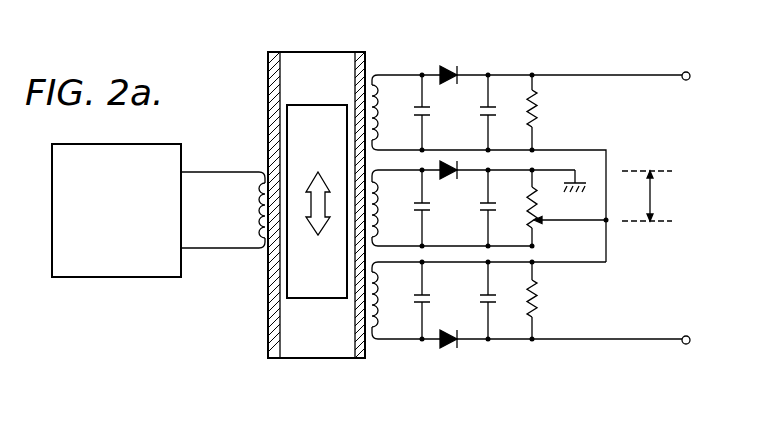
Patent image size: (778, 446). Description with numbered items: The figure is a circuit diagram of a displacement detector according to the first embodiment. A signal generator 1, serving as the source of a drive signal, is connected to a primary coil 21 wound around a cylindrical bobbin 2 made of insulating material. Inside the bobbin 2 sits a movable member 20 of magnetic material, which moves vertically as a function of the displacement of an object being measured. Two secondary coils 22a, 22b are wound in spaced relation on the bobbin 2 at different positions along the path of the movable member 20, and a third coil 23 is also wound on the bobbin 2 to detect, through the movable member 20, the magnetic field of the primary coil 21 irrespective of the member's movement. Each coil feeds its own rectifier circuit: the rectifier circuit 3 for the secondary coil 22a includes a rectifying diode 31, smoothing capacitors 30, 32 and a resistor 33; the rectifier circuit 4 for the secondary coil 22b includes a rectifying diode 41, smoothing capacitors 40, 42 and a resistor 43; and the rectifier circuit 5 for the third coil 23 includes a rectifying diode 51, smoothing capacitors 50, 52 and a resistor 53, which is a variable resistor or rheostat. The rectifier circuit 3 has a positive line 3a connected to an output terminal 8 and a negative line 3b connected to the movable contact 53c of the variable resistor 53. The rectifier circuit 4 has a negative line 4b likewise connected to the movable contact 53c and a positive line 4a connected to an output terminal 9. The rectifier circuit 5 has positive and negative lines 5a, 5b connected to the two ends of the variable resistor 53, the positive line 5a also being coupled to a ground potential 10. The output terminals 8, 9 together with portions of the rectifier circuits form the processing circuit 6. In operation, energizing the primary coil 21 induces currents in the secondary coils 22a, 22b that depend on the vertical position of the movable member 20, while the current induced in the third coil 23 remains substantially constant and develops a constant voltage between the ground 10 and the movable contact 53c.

The signal generator 1 is at (128, 267).
The cylindrical bobbin 2 is at (275, 316).
The movable member 20 is at (322, 288).
The primary coil 21 is at (252, 213).
The secondary coil 22a is at (383, 100).
The secondary coil 22b is at (382, 328).
The third coil 23 is at (381, 208).
The rectifier circuit 3 is at (527, 132).
The positive terminal or line 3a is at (600, 75).
The negative terminal or line 3b is at (573, 150).
The smoothing capacitor 30 is at (421, 118).
The rectifying diode 31 is at (448, 73).
The smoothing capacitor 32 is at (492, 108).
The resistor 33 is at (540, 110).
The rectifier circuit 4 is at (514, 338).
The positive terminal or line 4a is at (632, 342).
The negative terminal or line 4b is at (553, 263).
The smoothing capacitor 40 is at (426, 297).
The rectifying diode 41 is at (450, 343).
The smoothing capacitor 42 is at (491, 300).
The resistor 43 is at (539, 303).
The rectifier circuit 5 is at (535, 207).
The positive terminal or line 5a is at (511, 168).
The negative terminal or line 5b is at (507, 258).
The smoothing capacitor 50 is at (420, 213).
The rectifying diode 51 is at (445, 163).
The smoothing capacitor 52 is at (485, 211).
The variable resistor 53 is at (537, 223).
The movable contact 53c is at (592, 224).
The processing circuit 6 is at (583, 353).
The output terminal 8 is at (683, 72).
The output terminal 9 is at (686, 336).
The ground potential 10 is at (578, 170).